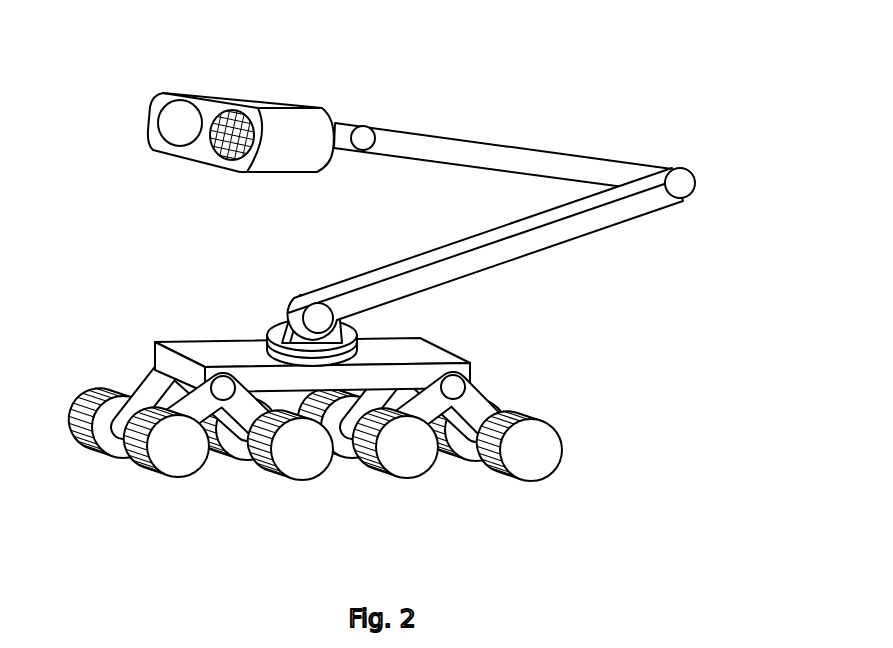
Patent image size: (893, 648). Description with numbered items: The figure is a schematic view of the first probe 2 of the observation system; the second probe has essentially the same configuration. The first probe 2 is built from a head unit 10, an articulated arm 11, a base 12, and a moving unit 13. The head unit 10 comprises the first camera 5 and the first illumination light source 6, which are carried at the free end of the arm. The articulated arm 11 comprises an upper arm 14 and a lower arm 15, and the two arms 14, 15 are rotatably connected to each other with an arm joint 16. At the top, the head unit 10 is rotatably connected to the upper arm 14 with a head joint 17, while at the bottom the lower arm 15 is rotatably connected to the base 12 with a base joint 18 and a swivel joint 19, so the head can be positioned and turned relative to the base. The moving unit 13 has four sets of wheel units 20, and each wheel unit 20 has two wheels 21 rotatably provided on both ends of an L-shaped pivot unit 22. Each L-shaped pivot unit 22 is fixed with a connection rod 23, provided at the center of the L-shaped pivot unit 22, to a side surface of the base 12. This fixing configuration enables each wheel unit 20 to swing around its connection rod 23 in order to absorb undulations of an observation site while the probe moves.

The first probe 2 is at (611, 111).
The first camera 5 is at (174, 152).
The first illumination light source 6 is at (225, 163).
The head unit 10 is at (273, 92).
The articulated arm 11 is at (517, 146).
The base 12 is at (443, 353).
The moving unit 13 is at (78, 535).
The upper arm 14 is at (455, 137).
The lower arm 15 is at (585, 247).
The arm joint 16 is at (694, 172).
The head joint 17 is at (364, 126).
The base joint 18 is at (313, 287).
The swivel joint 19 is at (266, 330).
The wheel unit 20 is at (352, 483).
The wheel 21 is at (558, 423).
The L-shaped pivot unit 22 is at (493, 390).
The connection rod 23 is at (473, 370).